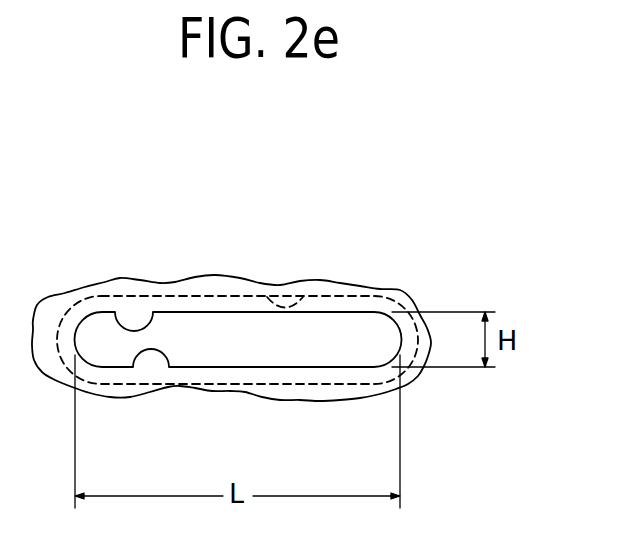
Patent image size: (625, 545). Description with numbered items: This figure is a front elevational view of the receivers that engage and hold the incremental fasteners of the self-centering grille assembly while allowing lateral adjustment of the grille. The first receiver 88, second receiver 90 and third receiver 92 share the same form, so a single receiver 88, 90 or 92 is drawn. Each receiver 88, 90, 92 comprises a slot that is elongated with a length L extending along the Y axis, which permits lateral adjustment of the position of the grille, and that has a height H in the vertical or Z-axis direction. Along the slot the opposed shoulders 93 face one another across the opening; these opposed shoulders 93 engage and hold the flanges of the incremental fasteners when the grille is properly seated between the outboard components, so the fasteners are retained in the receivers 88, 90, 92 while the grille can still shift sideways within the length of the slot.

The first receiver 88 is at (242, 273).
The second receiver 90 is at (242, 273).
The third receiver 92 is at (305, 298).
The opposed shoulders 93 is at (150, 323).